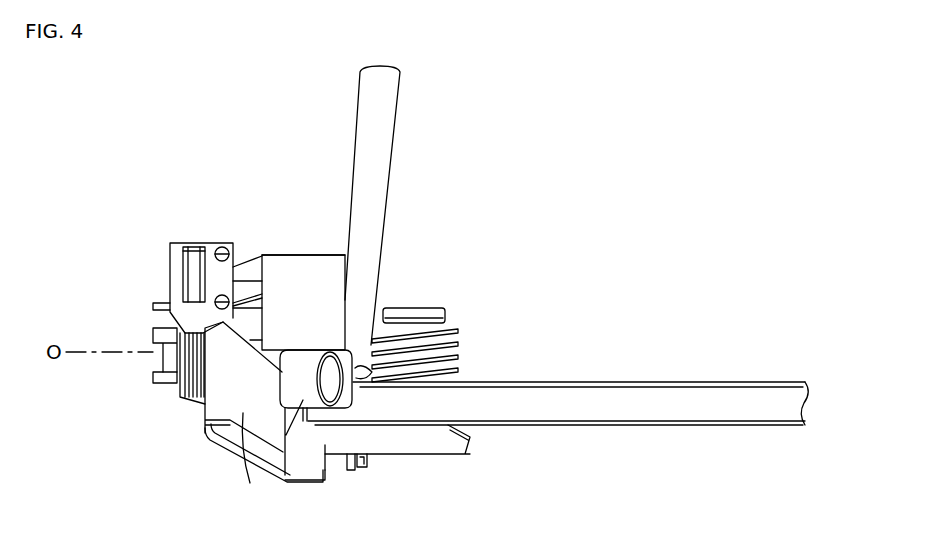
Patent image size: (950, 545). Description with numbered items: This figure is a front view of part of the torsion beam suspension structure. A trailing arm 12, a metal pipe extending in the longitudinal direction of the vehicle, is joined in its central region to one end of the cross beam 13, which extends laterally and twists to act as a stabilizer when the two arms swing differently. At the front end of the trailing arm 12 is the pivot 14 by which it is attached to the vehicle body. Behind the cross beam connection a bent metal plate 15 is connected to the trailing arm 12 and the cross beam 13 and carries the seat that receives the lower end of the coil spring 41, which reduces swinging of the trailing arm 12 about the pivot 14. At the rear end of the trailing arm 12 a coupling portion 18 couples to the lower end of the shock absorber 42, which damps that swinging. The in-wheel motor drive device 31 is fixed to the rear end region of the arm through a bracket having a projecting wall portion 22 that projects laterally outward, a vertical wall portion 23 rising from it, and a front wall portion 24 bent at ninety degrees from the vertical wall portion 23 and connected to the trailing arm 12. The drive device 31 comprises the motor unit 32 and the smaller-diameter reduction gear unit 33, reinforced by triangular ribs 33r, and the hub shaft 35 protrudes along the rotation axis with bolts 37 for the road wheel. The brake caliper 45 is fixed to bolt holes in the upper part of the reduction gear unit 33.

The trailing arm 12 is at (328, 478).
The cross beam 13 is at (657, 381).
The pivot 14 is at (305, 398).
The plate 15 is at (470, 441).
The coupling portion 18 is at (363, 470).
The projecting wall portion 22 is at (232, 454).
The vertical wall portion 23 is at (205, 407).
The front wall portion 24 is at (250, 461).
The in-wheel motor drive device 31 is at (292, 253).
The motor unit 32 is at (321, 253).
The reduction gear unit 33 is at (246, 286).
The triangular rib 33r is at (253, 268).
The hub shaft 35 is at (158, 357).
The bolt 37 is at (160, 379).
The coil spring 41 is at (450, 326).
The shock absorber 42 is at (378, 197).
The brake caliper 45 is at (170, 253).